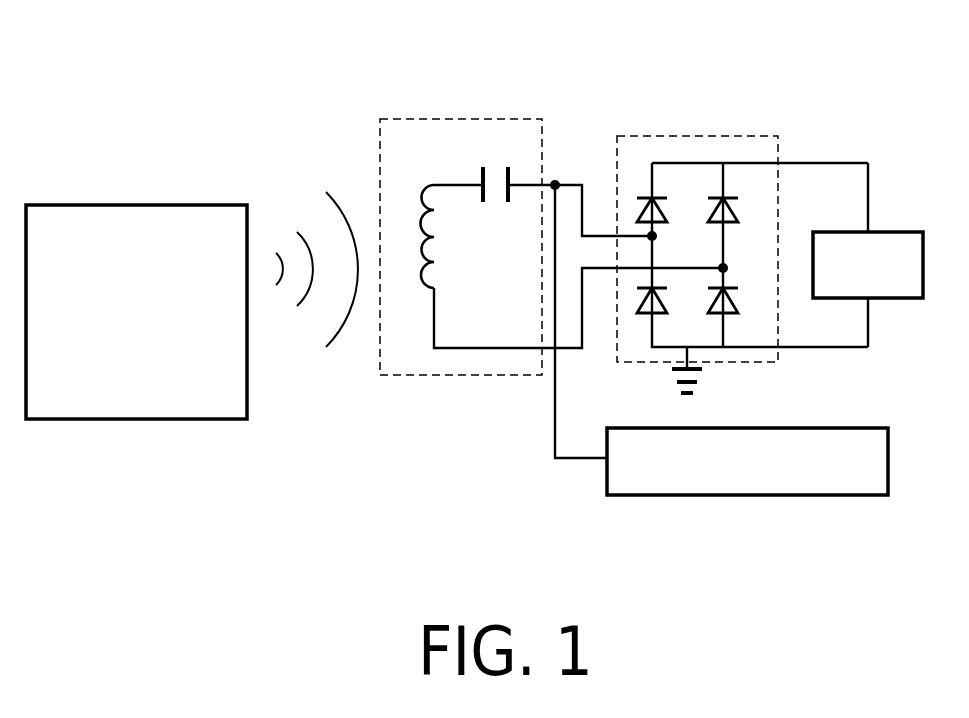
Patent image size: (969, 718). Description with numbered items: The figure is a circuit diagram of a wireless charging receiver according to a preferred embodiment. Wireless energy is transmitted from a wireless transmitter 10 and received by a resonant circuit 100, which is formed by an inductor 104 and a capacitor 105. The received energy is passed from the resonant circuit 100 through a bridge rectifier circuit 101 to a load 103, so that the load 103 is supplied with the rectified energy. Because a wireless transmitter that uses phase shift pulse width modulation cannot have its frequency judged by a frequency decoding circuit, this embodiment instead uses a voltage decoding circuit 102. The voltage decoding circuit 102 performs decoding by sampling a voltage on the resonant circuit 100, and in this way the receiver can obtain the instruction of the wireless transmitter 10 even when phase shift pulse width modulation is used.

The wireless transmitter 10 is at (209, 402).
The resonant circuit 100 is at (551, 303).
The bridge rectifier circuit 101 is at (663, 136).
The voltage decoding circuit 102 is at (787, 495).
The load 103 is at (885, 233).
The inductor 104 is at (435, 242).
The capacitor 105 is at (498, 183).